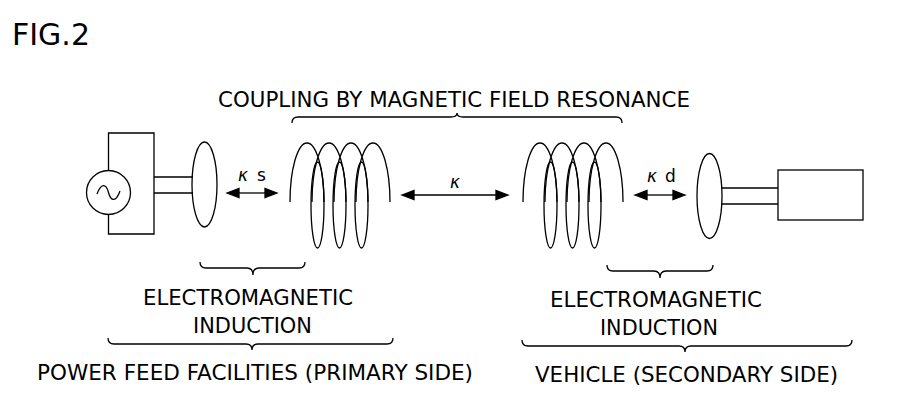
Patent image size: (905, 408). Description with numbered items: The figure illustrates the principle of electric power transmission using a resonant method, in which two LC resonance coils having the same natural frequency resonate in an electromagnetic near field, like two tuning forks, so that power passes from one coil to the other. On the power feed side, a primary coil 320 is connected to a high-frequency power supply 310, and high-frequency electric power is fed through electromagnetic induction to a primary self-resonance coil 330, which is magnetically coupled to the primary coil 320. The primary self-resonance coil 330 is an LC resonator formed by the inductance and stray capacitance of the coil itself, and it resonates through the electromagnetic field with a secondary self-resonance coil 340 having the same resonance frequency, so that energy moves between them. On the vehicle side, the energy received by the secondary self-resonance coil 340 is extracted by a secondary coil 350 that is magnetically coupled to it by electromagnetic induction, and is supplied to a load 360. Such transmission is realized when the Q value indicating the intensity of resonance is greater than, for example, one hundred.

The high-frequency power supply 310 is at (100, 171).
The primary coil 320 is at (204, 142).
The primary self-resonance coil 330 is at (340, 248).
The secondary self-resonance coil 340 is at (572, 248).
The secondary coil 350 is at (710, 154).
The load 360 is at (821, 170).